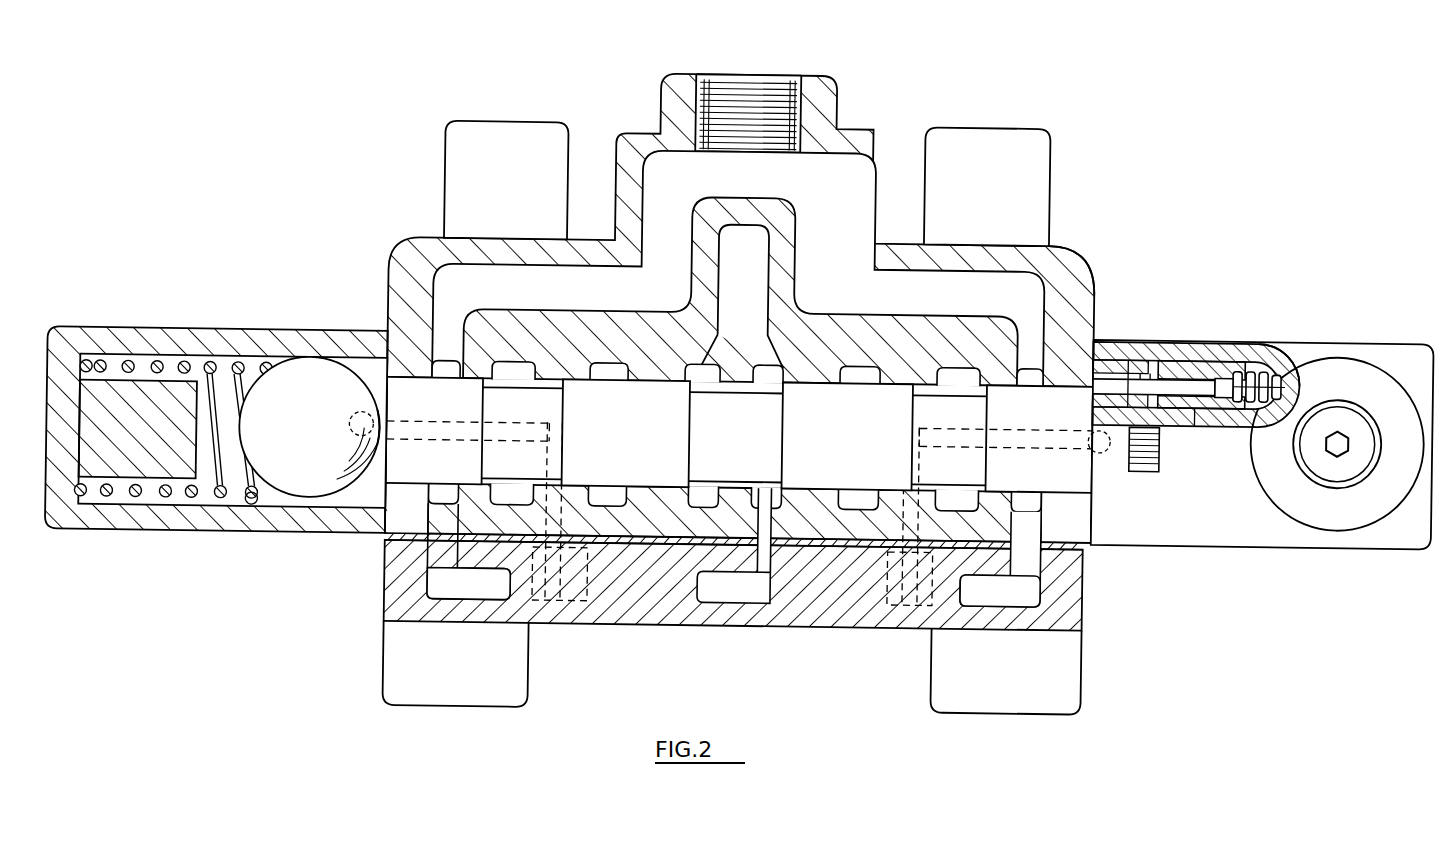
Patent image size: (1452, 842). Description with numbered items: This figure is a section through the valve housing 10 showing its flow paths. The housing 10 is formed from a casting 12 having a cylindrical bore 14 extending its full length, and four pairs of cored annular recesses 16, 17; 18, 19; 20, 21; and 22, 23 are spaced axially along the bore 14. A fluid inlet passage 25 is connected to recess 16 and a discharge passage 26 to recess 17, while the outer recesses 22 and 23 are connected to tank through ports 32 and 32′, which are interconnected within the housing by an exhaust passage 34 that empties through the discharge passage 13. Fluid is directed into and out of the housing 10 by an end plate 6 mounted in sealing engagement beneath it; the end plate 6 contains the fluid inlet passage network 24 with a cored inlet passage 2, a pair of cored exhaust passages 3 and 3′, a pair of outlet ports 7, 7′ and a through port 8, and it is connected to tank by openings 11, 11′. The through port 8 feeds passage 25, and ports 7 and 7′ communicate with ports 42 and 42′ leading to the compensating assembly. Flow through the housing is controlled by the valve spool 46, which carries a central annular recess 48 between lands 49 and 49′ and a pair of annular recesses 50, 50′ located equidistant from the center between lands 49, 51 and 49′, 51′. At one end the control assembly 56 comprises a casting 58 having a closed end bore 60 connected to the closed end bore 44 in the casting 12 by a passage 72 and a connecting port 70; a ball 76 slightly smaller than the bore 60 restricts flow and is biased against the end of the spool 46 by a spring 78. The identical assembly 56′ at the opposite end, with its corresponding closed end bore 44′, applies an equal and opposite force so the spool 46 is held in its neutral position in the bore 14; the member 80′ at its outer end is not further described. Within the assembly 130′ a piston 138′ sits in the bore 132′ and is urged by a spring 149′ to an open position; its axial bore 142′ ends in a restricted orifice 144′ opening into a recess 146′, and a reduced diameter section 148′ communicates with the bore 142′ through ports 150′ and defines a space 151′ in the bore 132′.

The cored inlet passage 2 is at (775, 588).
The cored exhaust passage 3 is at (470, 598).
The cored exhaust passage 3′ is at (993, 598).
The end plate 6 is at (1085, 598).
The outlet port 7 is at (585, 552).
The outlet port 7′ is at (890, 547).
The through port 8 is at (772, 562).
The valve housing 10 is at (1093, 255).
The opening 11 is at (432, 565).
The opening 11′ is at (1040, 570).
The casting 12 is at (1058, 240).
The discharge passage 13 is at (750, 68).
The cylindrical bore 14 is at (674, 378).
The annular recess 16 is at (690, 497).
The annular recess 17 is at (783, 500).
The annular recess 18 is at (620, 503).
The annular recess 19 is at (860, 503).
The annular recess 20 is at (510, 503).
The annular recess 21 is at (965, 503).
The annular recess 22 is at (432, 494).
The annular recess 23 is at (1036, 498).
The fluid inlet passage network 24 is at (720, 605).
The fluid inlet passage 25 is at (705, 520).
The discharge passage 26 is at (756, 263).
The port 32 is at (433, 522).
The port 32′ is at (1030, 521).
The exhaust passage 34 is at (759, 171).
The port 42 is at (548, 520).
The port 42′ is at (905, 514).
The closed end bore 44 is at (444, 415).
The spool land 44′ is at (1005, 415).
The valve spool 46 is at (806, 395).
The central annular recess 48 is at (725, 372).
The land 49 is at (625, 378).
The land 49′ is at (835, 383).
The annular recess 50 is at (550, 378).
The annular recess 50′ is at (940, 378).
The land 51 is at (420, 375).
The land 51′ is at (1058, 384).
The control assembly 56 is at (213, 532).
The control assembly 56′ is at (1255, 535).
The casting 58 is at (148, 533).
The closed end bore 60 is at (176, 510).
The connecting port 70 is at (375, 425).
The passage 72 is at (352, 424).
The ball 76 is at (306, 402).
The spring 78 is at (243, 504).
The adjusting cap 80′ is at (1345, 345).
The assembly 130′ is at (1192, 348).
The bore 132′ is at (1200, 418).
The piston 138′ is at (1190, 358).
The axial bore 142′ is at (1178, 395).
The restricted orifice 144′ is at (1225, 400).
The recess 146′ is at (1245, 417).
The reduced diameter section 148′ is at (1112, 350).
The spring 149′ is at (1268, 358).
The ports 150′ is at (1145, 365).
The space 151′ is at (1140, 360).